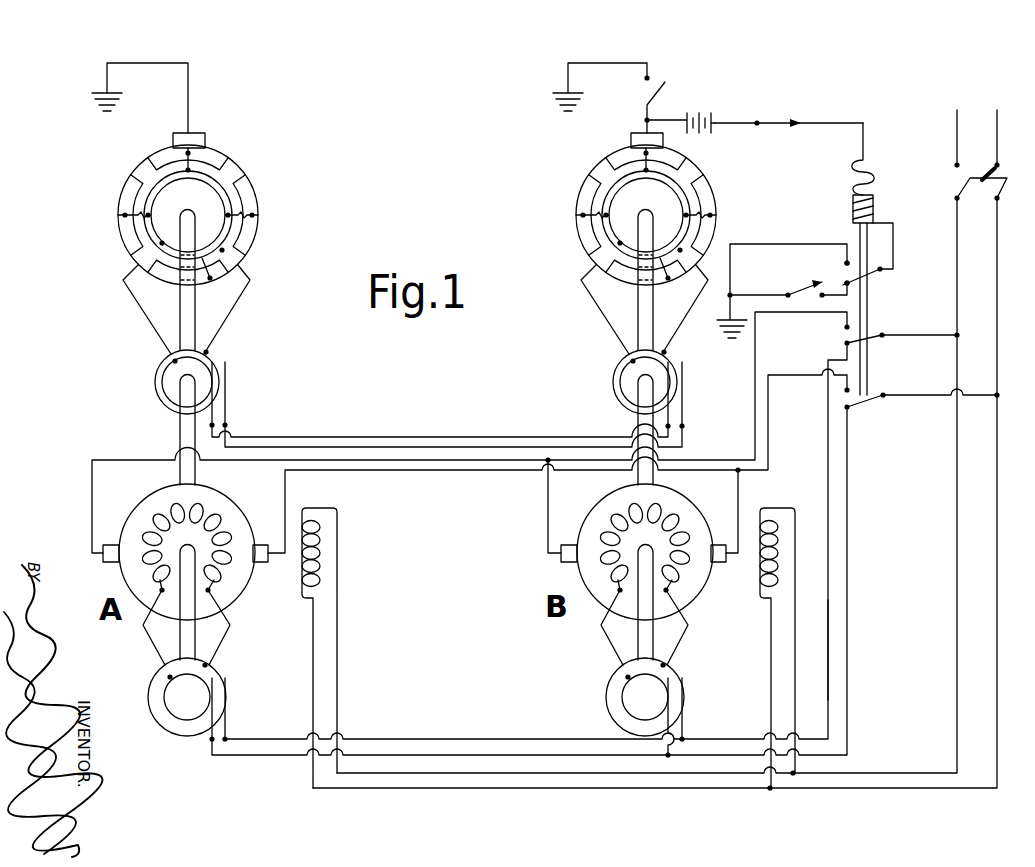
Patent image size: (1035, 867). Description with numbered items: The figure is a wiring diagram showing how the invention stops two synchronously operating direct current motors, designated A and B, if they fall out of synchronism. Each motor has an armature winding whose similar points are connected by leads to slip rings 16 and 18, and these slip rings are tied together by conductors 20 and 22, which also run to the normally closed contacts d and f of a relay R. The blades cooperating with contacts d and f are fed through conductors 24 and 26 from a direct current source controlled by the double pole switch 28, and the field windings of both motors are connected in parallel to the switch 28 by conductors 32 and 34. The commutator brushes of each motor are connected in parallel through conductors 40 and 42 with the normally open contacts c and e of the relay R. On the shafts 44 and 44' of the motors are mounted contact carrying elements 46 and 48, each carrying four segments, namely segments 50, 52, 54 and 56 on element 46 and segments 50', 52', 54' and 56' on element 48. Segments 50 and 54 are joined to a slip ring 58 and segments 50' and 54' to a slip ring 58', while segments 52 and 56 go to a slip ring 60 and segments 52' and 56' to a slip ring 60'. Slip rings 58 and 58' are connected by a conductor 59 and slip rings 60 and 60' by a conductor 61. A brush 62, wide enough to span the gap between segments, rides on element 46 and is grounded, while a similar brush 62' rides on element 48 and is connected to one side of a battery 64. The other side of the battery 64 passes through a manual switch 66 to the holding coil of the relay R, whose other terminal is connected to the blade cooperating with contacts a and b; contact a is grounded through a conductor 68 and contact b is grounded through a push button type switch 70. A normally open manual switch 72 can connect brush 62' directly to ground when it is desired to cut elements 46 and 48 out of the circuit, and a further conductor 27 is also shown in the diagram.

The slip ring 16 is at (187, 722).
The slip ring 18 is at (153, 712).
The conductor 20 is at (468, 754).
The conductor 22 is at (444, 738).
The conductor 24 is at (885, 335).
The conductor 26 is at (935, 397).
The conductor 27 is at (828, 597).
The double pole switch 28 is at (967, 178).
The conductor 32 is at (527, 774).
The conductor 34 is at (600, 789).
The conductor 40 is at (755, 417).
The conductor 42 is at (768, 464).
The shaft 44 is at (186, 348).
The shaft 44' is at (641, 348).
The contact carrying element 46 is at (237, 170).
The contact carrying element 48 is at (629, 215).
The segment 50 is at (196, 195).
The segment 50' is at (660, 204).
The segment 52 is at (219, 215).
The segment 52' is at (680, 213).
The segment 54 is at (194, 273).
The segment 54' is at (655, 273).
The segment 56 is at (176, 233).
The segment 56' is at (629, 234).
The slip ring 58 is at (168, 373).
The slip ring 58' is at (624, 376).
The slip ring 60 is at (164, 382).
The slip ring 60' is at (620, 382).
The conductor 61 is at (368, 436).
The conductor 59 is at (403, 446).
The brush 62 is at (148, 118).
The brush 62' is at (629, 146).
The battery 64 is at (698, 110).
The manual switch 66 is at (768, 122).
The conductor 68 is at (753, 243).
The push button type switch 70 is at (740, 294).
The manual switch 72 is at (664, 92).
The relay R is at (869, 259).
The contact a is at (841, 263).
The contact b is at (842, 285).
The contact c is at (842, 327).
The contact d is at (841, 345).
The contact e is at (842, 389).
The contact f is at (842, 410).